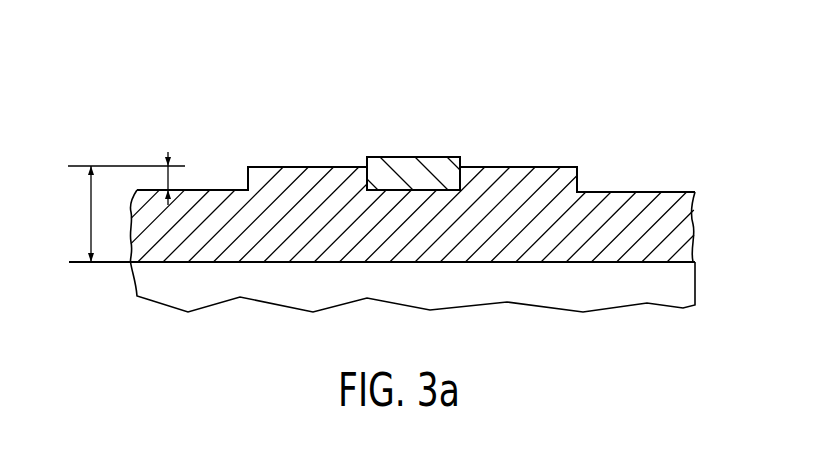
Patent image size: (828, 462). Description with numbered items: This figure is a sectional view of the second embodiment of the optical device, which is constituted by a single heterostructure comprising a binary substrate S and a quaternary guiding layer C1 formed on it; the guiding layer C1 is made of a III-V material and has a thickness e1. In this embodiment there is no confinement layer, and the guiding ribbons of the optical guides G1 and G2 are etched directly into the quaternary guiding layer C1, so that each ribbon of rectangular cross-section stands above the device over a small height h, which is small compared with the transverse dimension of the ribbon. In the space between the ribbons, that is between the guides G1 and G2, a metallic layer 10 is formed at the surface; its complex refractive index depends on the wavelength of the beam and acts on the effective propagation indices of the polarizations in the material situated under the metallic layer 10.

The guiding layer C1 is at (681, 224).
The substrate S is at (678, 290).
The metallic layer 10 is at (417, 157).
The guide G1 is at (282, 166).
The guide G2 is at (512, 166).
The height h is at (172, 178).
The thickness e1 is at (121, 214).